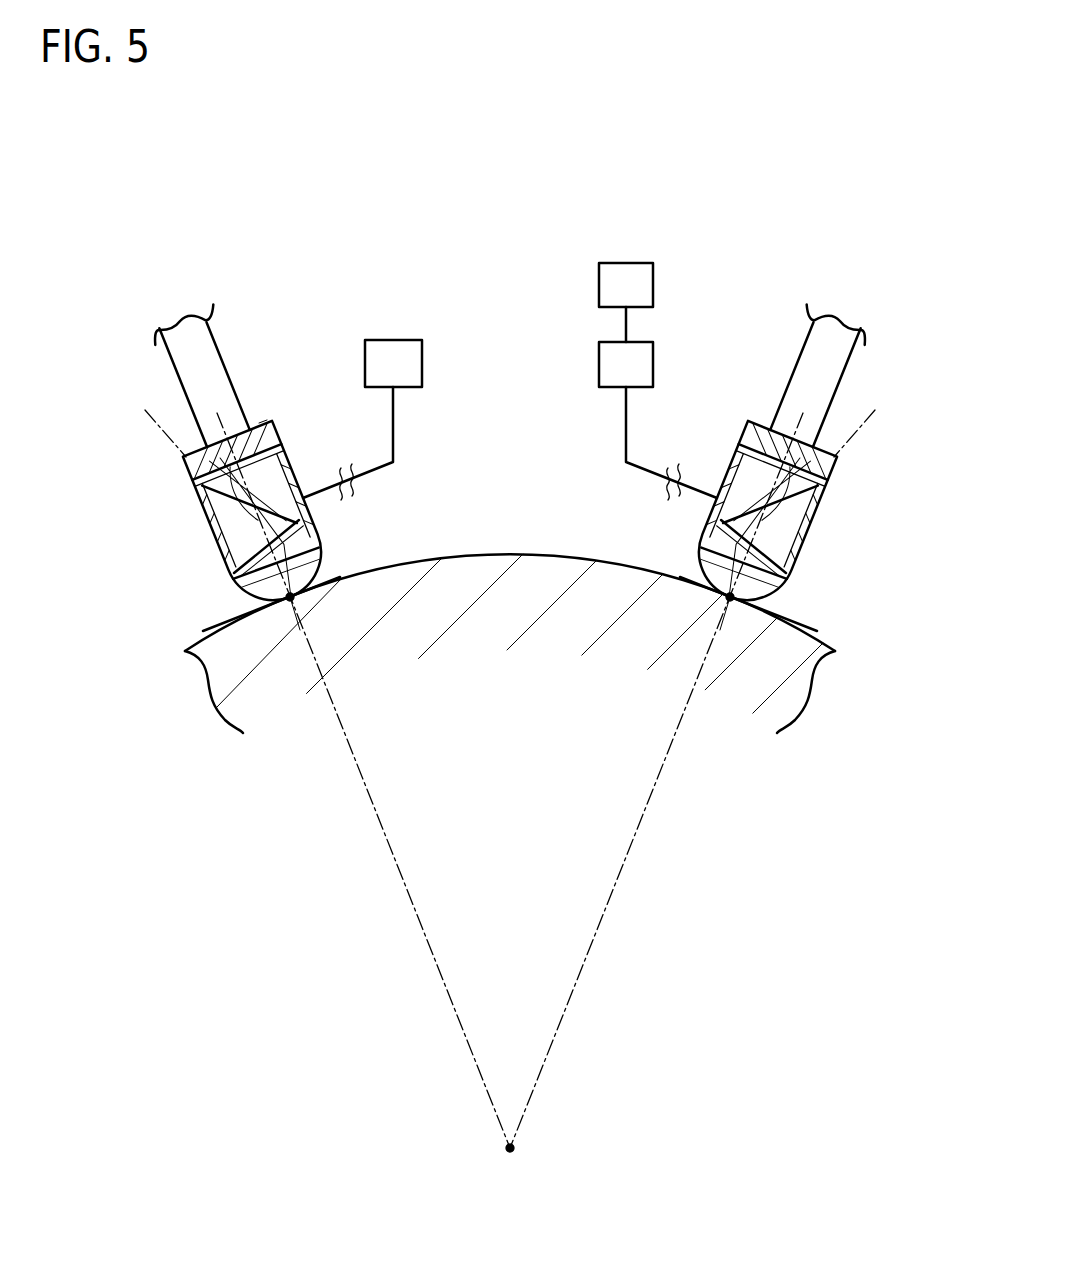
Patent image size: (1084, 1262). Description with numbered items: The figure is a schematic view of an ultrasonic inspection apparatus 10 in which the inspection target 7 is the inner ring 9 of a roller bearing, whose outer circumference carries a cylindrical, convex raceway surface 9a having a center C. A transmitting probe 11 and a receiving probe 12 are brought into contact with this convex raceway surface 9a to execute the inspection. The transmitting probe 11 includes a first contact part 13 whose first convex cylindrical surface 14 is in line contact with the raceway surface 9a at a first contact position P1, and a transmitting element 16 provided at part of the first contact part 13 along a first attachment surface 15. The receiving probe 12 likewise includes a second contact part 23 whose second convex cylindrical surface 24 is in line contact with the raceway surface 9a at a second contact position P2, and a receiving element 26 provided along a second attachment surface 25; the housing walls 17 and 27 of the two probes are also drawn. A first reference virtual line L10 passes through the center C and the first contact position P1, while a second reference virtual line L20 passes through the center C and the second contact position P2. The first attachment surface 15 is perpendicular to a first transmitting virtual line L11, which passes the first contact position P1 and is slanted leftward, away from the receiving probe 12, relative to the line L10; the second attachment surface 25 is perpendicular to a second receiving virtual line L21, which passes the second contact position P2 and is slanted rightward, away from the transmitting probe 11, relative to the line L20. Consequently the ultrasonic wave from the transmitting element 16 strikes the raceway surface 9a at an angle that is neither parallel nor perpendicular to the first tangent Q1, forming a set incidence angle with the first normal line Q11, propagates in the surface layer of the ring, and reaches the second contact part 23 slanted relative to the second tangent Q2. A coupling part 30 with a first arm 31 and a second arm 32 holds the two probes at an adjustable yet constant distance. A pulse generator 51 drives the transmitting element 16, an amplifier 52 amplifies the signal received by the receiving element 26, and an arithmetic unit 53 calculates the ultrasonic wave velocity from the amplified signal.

The inspection target 7 is at (510, 619).
The inner ring 9 is at (560, 622).
The raceway surface 9a is at (583, 553).
The ultrasonic inspection apparatus 10 is at (520, 403).
The transmitting probe 11 is at (254, 509).
The receiving probe 12 is at (762, 509).
The first contact part 13 is at (300, 557).
The first convex cylindrical surface 14 is at (291, 599).
The first attachment surface 15 is at (296, 486).
The transmitting element 16 is at (233, 553).
The first housing wall 17 is at (202, 495).
The second contact part 23 is at (720, 557).
The second convex cylindrical surface 24 is at (729, 599).
The second attachment surface 25 is at (724, 486).
The receiving element 26 is at (787, 553).
The second housing wall 27 is at (818, 485).
The coupling part 30 is at (520, 377).
The first arm 31 is at (172, 373).
The second arm 32 is at (797, 365).
The pulse generator 51 is at (392, 341).
The amplifier 52 is at (612, 388).
The arithmetic unit 53 is at (626, 262).
The center of the raceway surface C is at (516, 1148).
The first contact position P1 is at (289, 600).
The second contact position P2 is at (731, 600).
The first tangent Q1 is at (228, 610).
The second tangent Q2 is at (792, 610).
The first normal line Q11 is at (263, 418).
The first reference virtual line L10 is at (388, 850).
The second reference virtual line L20 is at (632, 850).
The first transmitting virtual line L11 is at (170, 442).
The second receiving virtual line L21 is at (850, 442).